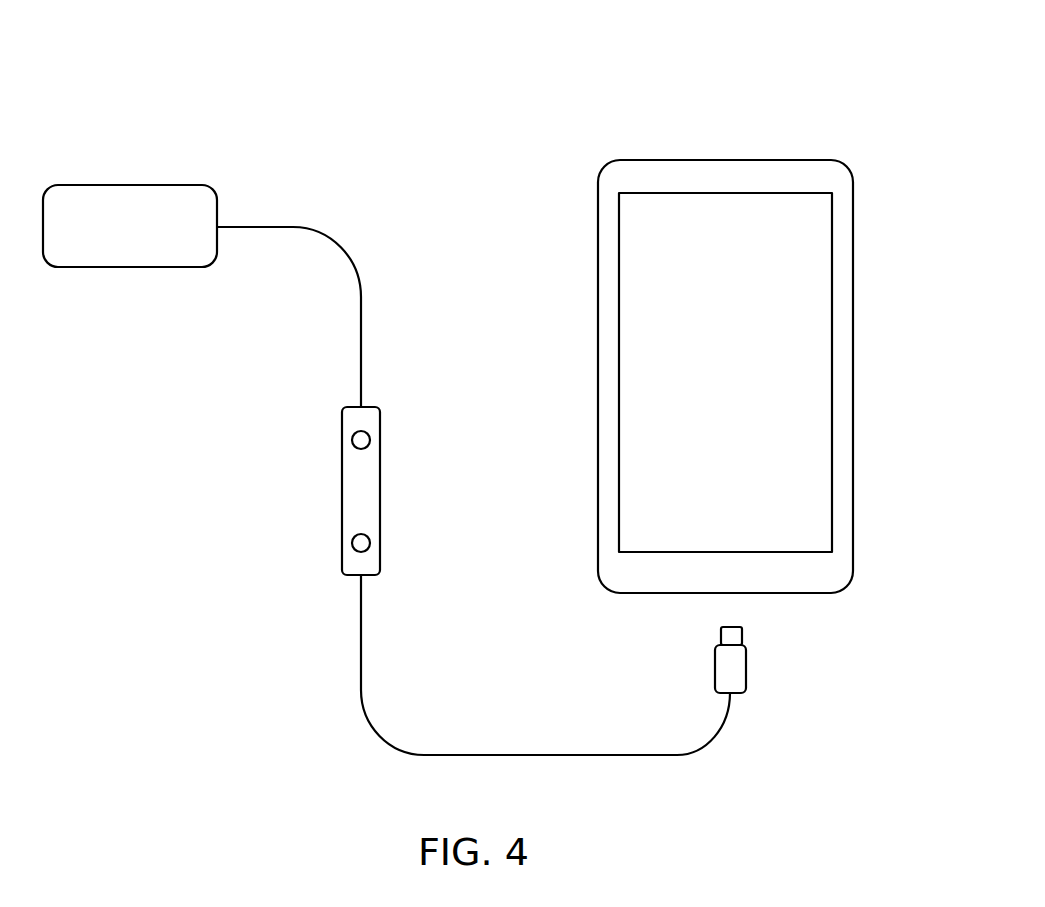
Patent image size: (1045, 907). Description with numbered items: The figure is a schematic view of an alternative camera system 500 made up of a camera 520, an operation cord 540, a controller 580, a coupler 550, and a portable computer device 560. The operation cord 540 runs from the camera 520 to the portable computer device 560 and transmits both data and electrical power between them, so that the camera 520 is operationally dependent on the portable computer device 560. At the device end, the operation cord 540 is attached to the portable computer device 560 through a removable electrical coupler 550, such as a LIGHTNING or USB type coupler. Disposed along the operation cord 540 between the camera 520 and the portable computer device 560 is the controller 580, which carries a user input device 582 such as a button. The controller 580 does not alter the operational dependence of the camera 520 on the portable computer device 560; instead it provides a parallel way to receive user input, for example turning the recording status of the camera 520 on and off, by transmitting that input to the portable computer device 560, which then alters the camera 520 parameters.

The camera system 500 is at (853, 103).
The camera 520 is at (188, 195).
The operation cord 540 is at (362, 297).
The coupler 550 is at (732, 640).
The portable computer device 560 is at (823, 207).
The controller 580 is at (387, 410).
The user input device 582 is at (357, 445).